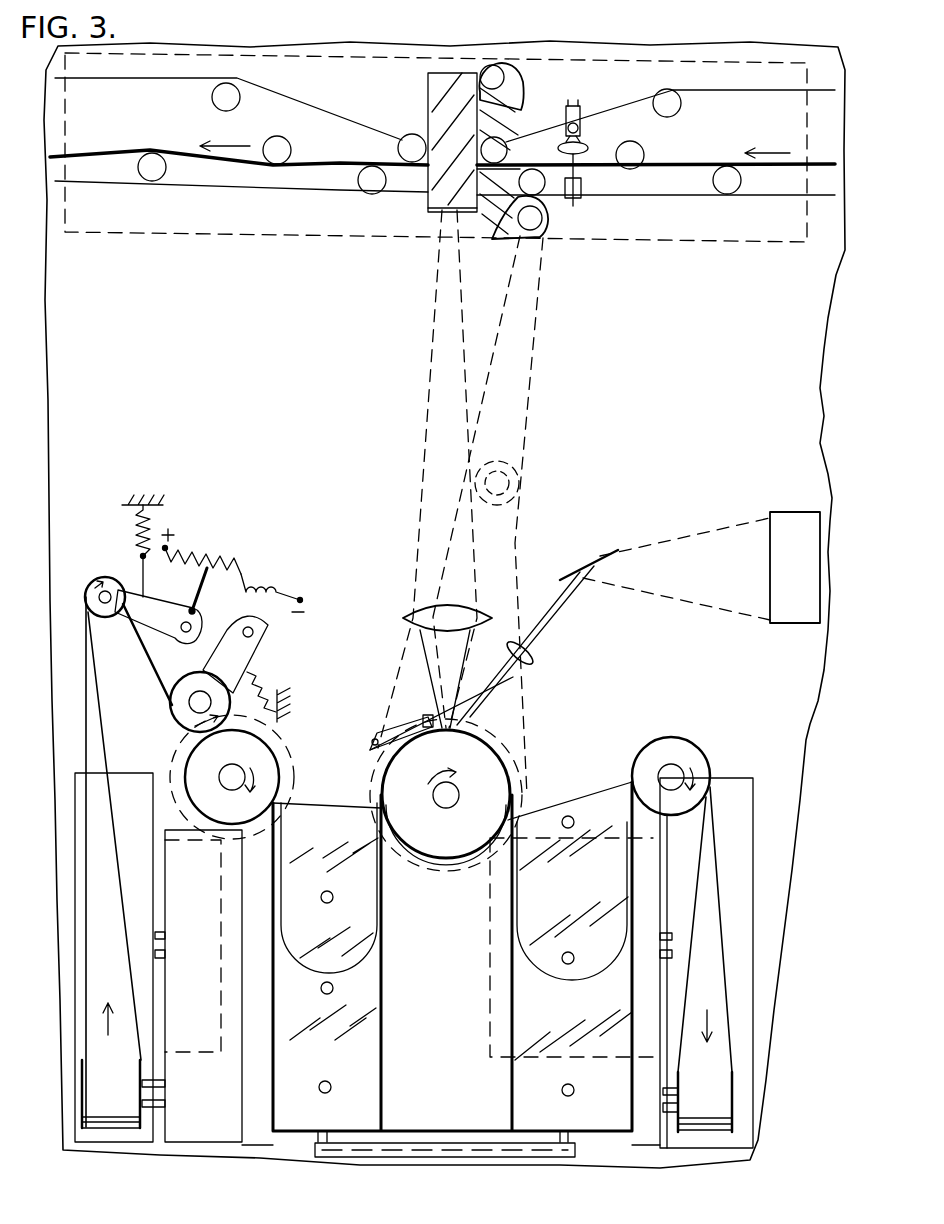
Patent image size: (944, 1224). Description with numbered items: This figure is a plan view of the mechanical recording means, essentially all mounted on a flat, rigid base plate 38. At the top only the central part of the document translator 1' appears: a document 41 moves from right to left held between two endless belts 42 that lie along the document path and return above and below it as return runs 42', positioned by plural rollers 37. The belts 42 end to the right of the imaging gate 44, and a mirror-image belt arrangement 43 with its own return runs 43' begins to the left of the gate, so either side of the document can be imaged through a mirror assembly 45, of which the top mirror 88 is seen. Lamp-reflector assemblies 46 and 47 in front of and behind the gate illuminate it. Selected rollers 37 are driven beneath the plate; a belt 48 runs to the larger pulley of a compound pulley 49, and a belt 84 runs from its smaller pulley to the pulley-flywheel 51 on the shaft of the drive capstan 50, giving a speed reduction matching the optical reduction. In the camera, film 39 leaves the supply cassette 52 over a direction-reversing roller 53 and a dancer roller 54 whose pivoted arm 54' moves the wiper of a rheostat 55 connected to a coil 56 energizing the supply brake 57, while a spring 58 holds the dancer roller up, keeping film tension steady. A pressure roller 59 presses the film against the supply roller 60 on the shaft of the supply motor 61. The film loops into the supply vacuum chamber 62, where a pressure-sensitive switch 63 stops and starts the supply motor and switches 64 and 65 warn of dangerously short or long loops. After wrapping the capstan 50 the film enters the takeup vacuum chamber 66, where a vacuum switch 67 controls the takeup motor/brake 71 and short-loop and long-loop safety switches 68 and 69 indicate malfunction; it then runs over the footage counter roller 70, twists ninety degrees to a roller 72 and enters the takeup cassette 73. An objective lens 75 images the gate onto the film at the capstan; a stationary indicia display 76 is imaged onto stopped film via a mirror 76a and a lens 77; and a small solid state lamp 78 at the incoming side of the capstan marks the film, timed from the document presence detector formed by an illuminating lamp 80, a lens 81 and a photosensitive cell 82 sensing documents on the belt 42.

The document translator 1' is at (436, 147).
The rollers 37 is at (439, 139).
The base plate 38 is at (48, 380).
The film 39 is at (409, 862).
The document 41 is at (506, 161).
The endless belts 42 is at (656, 155).
The return runs of endless belts 42' is at (656, 150).
The mirror-image belt arrangement 43 is at (239, 144).
The return runs of second belt arrangement 43' is at (241, 140).
The imaging gate 44 is at (452, 142).
The mirror assembly 45 is at (420, 176).
The document illuminating lamp-reflector assembly 46 is at (520, 217).
The document illuminating lamp-reflector assembly 47 is at (501, 86).
The belt 48 is at (540, 322).
The compound pulley 49 is at (521, 483).
The drive capstan 50 is at (446, 797).
The pulley-flywheel 51 is at (460, 878).
The supply cassette 52 is at (120, 957).
The direction-reversing roller 53 is at (111, 1102).
The dancer roller 54 is at (128, 641).
The pivoted arm 54' is at (158, 617).
The rheostat 55 is at (201, 568).
The coil 56 is at (272, 591).
The supply brake 57 is at (213, 1058).
The spring 58 is at (136, 546).
The pressure roller 59 is at (230, 674).
The supply roller 60 is at (232, 777).
The supply motor 61 is at (290, 795).
The supply vacuum chamber 62 is at (340, 810).
The pressure-sensitive switch 63 is at (452, 956).
The short-loop switch 64 is at (341, 898).
The long-loop switch 65 is at (338, 1078).
The takeup vacuum chamber 66 is at (570, 806).
The vacuum switch 67 is at (582, 958).
The short-loop safety switch 68 is at (582, 819).
The long-loop safety switch 69 is at (582, 1090).
The footage counter roller 70 is at (671, 776).
The takeup motor/brake 71 is at (653, 838).
The roller 72 is at (705, 1111).
The takeup cassette 73 is at (706, 963).
The lens 75 is at (447, 666).
The indicia display 76 is at (701, 567).
The mirror 76a is at (585, 570).
The lens 77 is at (531, 659).
The solid state lamp 78 is at (428, 716).
The illuminating lamp 80 is at (588, 121).
The lens 81 is at (582, 146).
The photosensitive cell 82 is at (581, 188).
The belt 84 is at (515, 545).
The top mirror 88 is at (428, 88).